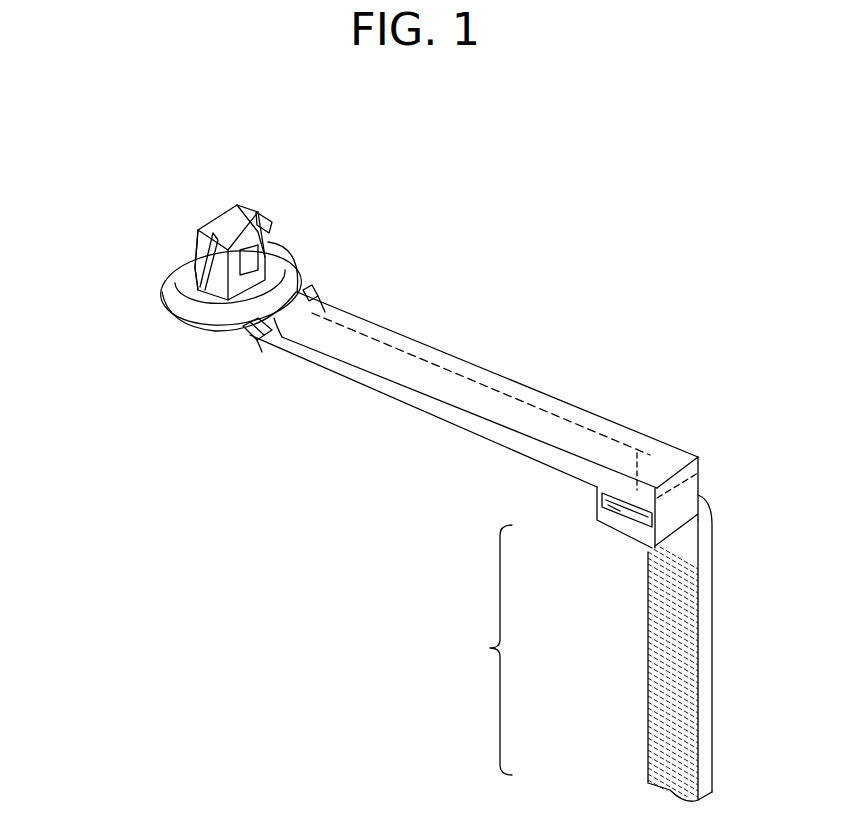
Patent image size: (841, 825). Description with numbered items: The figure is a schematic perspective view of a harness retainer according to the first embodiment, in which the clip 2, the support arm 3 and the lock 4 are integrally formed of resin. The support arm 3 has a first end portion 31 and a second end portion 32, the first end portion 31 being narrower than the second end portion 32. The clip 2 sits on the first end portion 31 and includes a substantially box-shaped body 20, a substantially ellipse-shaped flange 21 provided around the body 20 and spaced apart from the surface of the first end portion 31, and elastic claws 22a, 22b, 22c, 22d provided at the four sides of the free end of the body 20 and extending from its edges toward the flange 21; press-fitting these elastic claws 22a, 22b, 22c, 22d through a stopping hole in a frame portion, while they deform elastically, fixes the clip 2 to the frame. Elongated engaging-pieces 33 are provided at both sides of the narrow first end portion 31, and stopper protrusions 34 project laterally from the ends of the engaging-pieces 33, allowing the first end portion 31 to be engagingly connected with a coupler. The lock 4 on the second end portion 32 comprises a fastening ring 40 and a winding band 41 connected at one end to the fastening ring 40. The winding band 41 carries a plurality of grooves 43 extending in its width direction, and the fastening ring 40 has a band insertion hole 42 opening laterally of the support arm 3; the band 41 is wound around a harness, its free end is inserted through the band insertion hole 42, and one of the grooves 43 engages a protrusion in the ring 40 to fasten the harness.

The clip 2 is at (226, 203).
The substantially box-shaped body 20 is at (210, 325).
The substantially ellipse-shaped flange 21 is at (160, 303).
The elastic claw 22a is at (197, 258).
The elastic claw 22b is at (283, 254).
The elastic claw 22c is at (272, 225).
The elastic claw 22d is at (197, 243).
The support arm 3 is at (507, 375).
The first end portion 31 is at (299, 264).
The second end portion 32 is at (665, 450).
The elongated engaging-pieces 33 is at (307, 288).
The stopper protrusions 34 is at (258, 345).
The lock 4 is at (490, 650).
The fastening ring 40 is at (627, 543).
The winding band 41 is at (702, 558).
The band insertion hole 42 is at (600, 523).
The grooves 43 is at (647, 660).